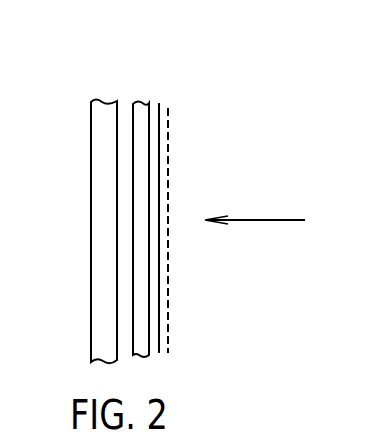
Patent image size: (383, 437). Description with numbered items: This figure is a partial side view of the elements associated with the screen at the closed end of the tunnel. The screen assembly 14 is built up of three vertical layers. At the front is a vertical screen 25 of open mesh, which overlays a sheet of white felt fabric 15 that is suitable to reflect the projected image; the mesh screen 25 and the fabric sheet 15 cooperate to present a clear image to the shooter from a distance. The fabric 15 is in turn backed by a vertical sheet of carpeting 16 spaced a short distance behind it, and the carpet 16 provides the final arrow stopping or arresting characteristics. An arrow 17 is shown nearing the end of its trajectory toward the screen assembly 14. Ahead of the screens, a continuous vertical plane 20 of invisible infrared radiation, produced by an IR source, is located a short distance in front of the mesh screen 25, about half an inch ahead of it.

The screen assembly 14 is at (131, 90).
The white felt fabric sheet 15 is at (143, 308).
The carpet 16 is at (100, 218).
The arrow 17 is at (250, 220).
The vertical plane of IR radiation 20 is at (170, 180).
The mesh screen 25 is at (159, 106).